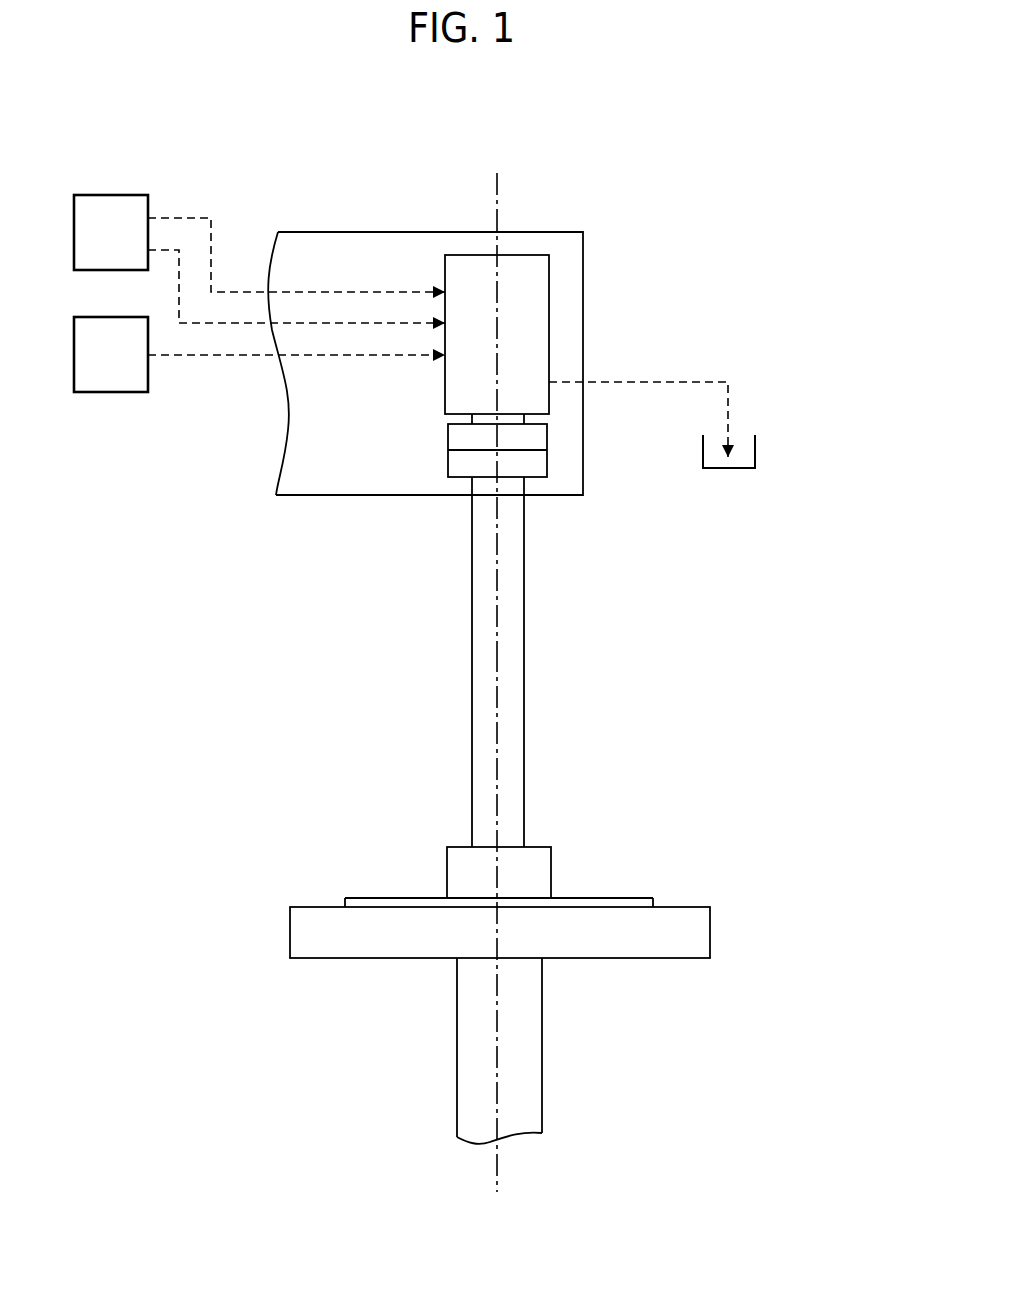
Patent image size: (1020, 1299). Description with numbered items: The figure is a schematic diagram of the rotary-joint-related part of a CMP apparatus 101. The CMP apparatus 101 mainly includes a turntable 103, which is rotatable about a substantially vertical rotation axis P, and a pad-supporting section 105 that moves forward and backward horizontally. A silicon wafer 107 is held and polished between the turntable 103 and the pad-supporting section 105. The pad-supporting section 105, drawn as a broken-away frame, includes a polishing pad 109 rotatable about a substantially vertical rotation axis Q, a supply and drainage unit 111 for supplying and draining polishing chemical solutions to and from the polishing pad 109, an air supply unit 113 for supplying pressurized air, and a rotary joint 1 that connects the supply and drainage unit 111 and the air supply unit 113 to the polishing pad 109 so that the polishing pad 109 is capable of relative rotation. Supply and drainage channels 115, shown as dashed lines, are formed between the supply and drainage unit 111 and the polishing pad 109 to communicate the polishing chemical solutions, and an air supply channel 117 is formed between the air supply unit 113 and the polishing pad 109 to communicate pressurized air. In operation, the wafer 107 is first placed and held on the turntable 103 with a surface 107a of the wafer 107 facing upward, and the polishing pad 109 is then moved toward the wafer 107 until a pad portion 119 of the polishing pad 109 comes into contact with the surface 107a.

The rotary joint 1 is at (563, 327).
The CMP apparatus 101 is at (658, 145).
The turntable 103 is at (730, 932).
The pad-supporting section 105 is at (555, 180).
The silicon wafer 107 is at (655, 905).
The surface of the wafer 107a is at (627, 897).
The polishing pad 109 is at (524, 695).
The supply and drainage unit 111 is at (112, 195).
The air supply unit 113 is at (113, 392).
The supply and drainage channels 115 is at (240, 292).
The air supply channel 117 is at (225, 355).
The pad portion 119 is at (447, 872).
The rotation axis of the polishing pad Q is at (497, 203).
The rotation axis of the turntable P is at (500, 1163).